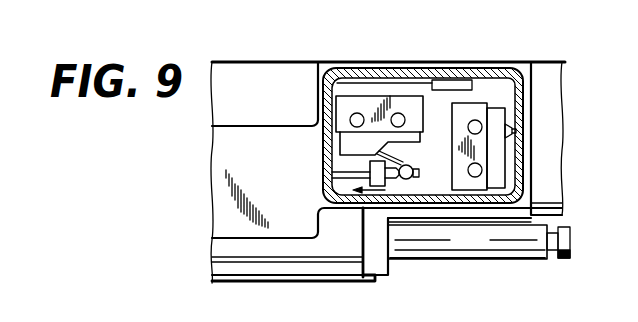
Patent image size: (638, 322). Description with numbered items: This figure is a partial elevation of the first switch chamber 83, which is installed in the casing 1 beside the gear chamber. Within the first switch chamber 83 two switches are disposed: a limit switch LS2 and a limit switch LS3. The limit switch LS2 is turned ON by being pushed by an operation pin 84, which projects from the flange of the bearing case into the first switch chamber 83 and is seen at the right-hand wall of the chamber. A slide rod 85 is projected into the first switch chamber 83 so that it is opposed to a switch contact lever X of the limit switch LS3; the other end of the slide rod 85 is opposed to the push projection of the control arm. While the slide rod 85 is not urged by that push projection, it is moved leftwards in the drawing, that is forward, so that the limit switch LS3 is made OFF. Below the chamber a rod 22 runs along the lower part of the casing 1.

The casing 1 is at (257, 80).
The first switch chamber 83 is at (497, 84).
The limit switch LS3 is at (373, 107).
The limit switch LS2 is at (468, 113).
The slide rod 85 is at (353, 174).
The switch contact lever X is at (417, 162).
The operation pin 84 is at (522, 146).
The rod 22 is at (482, 238).